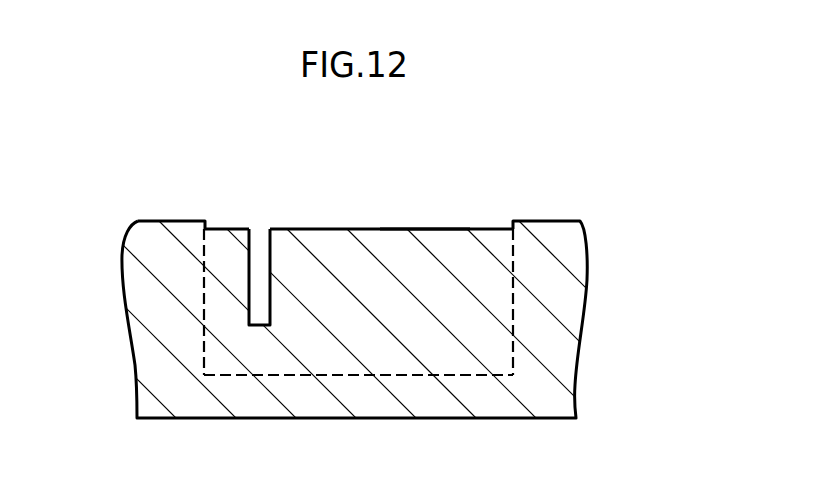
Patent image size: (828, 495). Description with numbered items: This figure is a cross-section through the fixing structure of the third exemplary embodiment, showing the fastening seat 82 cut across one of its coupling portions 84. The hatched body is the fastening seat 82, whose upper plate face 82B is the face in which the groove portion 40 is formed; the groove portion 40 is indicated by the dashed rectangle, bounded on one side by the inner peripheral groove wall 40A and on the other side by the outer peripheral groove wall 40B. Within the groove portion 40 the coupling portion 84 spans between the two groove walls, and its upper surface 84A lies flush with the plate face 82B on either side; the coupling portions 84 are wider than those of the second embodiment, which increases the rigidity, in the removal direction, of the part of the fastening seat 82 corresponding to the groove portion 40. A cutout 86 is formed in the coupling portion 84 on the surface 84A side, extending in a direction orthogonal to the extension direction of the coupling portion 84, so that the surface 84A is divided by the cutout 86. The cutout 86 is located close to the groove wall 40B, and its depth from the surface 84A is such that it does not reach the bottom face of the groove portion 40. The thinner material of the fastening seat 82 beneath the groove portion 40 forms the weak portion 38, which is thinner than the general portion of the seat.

The weak portion 38 is at (362, 398).
The groove portion 40 is at (363, 312).
The groove wall 40A is at (513, 288).
The groove wall 40B is at (204, 287).
The fastening seat 82 is at (341, 272).
The plate face 82B is at (173, 221).
The coupling portion 84 is at (342, 226).
The surface 84A is at (420, 228).
The cutout 86 is at (270, 258).